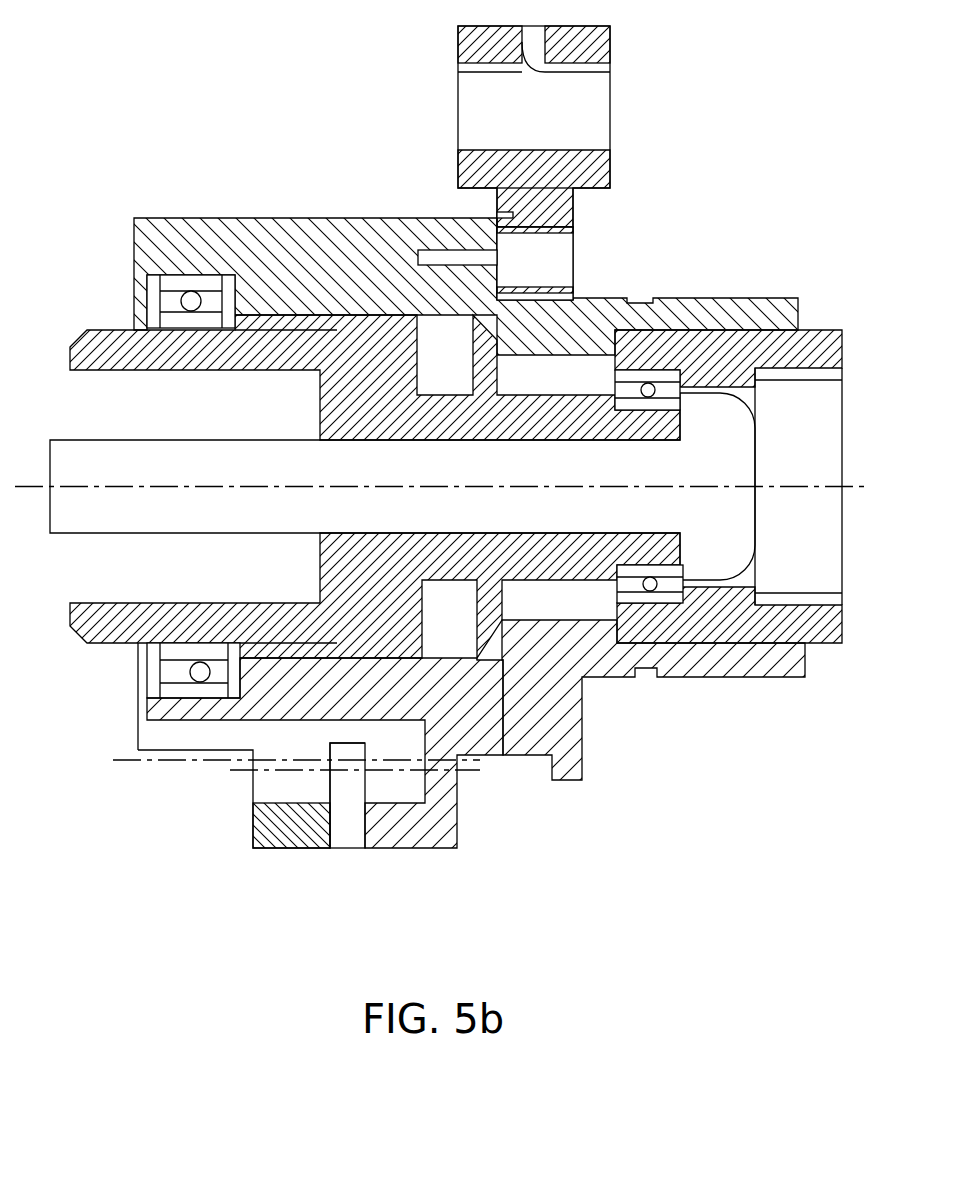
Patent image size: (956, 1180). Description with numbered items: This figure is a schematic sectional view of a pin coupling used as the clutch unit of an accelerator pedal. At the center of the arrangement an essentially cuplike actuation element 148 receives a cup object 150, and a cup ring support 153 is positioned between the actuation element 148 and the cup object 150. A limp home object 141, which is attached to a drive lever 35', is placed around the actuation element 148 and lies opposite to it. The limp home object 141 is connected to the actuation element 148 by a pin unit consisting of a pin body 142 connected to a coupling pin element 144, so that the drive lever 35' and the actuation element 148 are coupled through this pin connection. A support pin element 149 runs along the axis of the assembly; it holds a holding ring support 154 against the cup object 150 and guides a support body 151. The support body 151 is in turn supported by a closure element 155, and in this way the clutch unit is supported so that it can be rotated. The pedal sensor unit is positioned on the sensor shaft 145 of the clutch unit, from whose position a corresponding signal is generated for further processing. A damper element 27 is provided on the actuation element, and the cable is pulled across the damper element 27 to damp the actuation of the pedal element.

The damper element 27 is at (353, 828).
The drive lever 35' is at (593, 126).
The limp home object 141 is at (580, 203).
The pin body 142 is at (580, 248).
The coupling pin element 144 is at (438, 250).
The sensor shaft 145 is at (135, 220).
The actuation element 148 is at (296, 225).
The support pin element 149 is at (58, 520).
The cup object 150 is at (100, 347).
The support body 151 is at (825, 337).
The cup ring support 153 is at (168, 668).
The holding ring support 154 is at (668, 598).
The closure element 155 is at (830, 605).